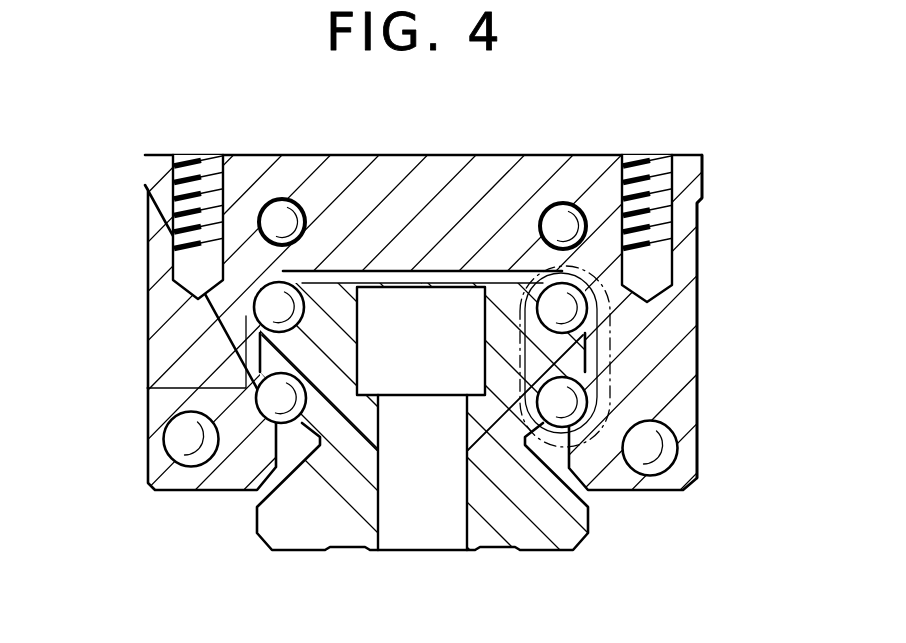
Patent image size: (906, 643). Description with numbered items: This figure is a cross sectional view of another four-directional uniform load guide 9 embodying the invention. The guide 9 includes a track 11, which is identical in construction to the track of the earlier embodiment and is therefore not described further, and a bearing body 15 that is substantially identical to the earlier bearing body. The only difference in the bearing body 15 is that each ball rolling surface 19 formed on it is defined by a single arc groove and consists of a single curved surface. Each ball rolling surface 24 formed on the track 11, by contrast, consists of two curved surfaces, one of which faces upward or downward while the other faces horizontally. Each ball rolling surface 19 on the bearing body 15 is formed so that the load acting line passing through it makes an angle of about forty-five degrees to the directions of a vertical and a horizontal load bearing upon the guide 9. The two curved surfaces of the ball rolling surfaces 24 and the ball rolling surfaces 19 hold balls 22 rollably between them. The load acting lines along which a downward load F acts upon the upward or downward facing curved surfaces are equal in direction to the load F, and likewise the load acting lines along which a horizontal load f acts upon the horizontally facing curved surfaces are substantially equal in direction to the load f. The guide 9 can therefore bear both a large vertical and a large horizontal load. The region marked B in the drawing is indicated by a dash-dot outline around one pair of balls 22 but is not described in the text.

The four-directional uniform load guide 9 is at (707, 155).
The track 11 is at (562, 553).
The bearing body 15 is at (690, 228).
The ball rolling surface 19 is at (298, 298).
The balls 22 is at (265, 300).
The ball rolling surface 24 is at (253, 313).
The detail region B is at (580, 444).
The downward load F is at (428, 140).
The horizontal load f is at (128, 222).